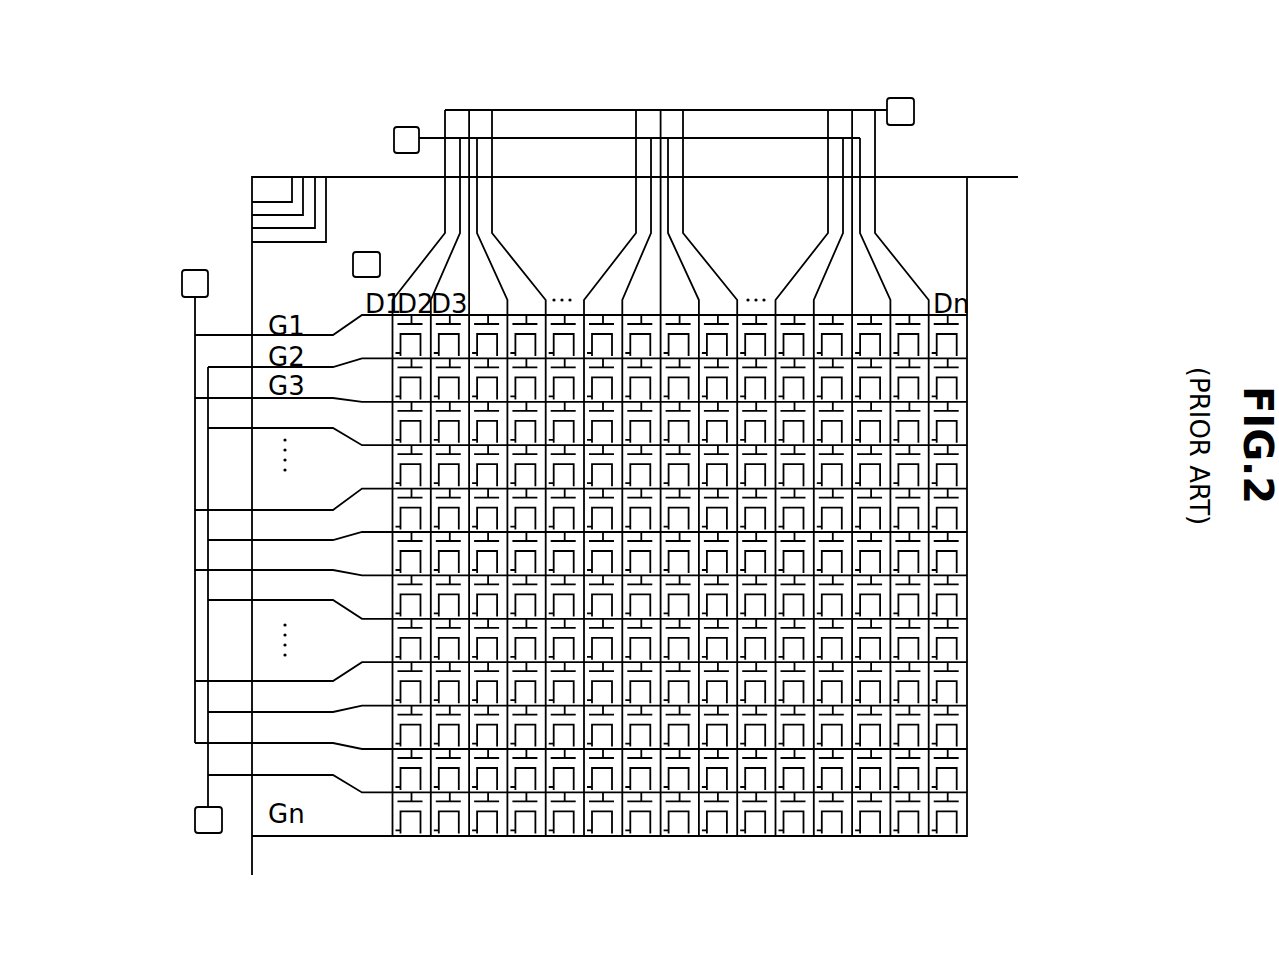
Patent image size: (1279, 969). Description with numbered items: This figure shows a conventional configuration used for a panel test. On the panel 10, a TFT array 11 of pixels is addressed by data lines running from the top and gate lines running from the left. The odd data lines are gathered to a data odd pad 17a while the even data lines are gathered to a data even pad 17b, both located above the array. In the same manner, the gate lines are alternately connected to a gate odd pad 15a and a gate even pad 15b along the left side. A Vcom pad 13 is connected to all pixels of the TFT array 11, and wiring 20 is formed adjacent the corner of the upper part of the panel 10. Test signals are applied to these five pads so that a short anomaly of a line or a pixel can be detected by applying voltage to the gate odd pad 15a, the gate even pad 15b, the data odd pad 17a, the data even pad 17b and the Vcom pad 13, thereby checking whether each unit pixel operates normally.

The panel 10 is at (258, 276).
The TFT array 11 is at (825, 538).
The Vcom pad 13 is at (363, 252).
The gate odd pad 15a is at (190, 280).
The gate even pad 15b is at (200, 815).
The data odd pad 17a is at (898, 110).
The data even pad 17b is at (407, 130).
The wiring 20 is at (287, 190).